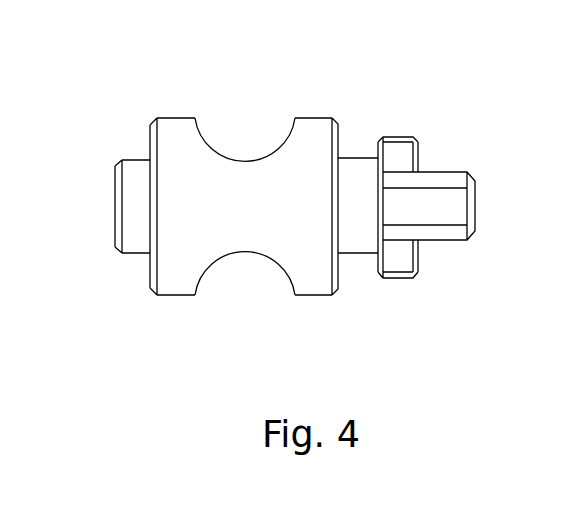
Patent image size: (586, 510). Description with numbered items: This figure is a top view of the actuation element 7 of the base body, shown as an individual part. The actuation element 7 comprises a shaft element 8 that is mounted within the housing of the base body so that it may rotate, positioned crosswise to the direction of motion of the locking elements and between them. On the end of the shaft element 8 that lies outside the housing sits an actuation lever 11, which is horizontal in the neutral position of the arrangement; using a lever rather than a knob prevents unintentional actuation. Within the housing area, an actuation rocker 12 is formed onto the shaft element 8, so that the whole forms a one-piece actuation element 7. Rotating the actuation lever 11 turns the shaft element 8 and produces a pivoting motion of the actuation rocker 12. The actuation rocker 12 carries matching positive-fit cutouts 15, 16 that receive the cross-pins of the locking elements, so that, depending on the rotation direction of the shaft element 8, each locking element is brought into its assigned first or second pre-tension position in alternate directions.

The actuation element 7 is at (135, 158).
The shaft element 8 is at (358, 207).
The actuation lever 11 is at (438, 207).
The actuation rocker 12 is at (290, 200).
The positive-fit cutout 15 is at (228, 157).
The positive-fit cutout 16 is at (228, 257).